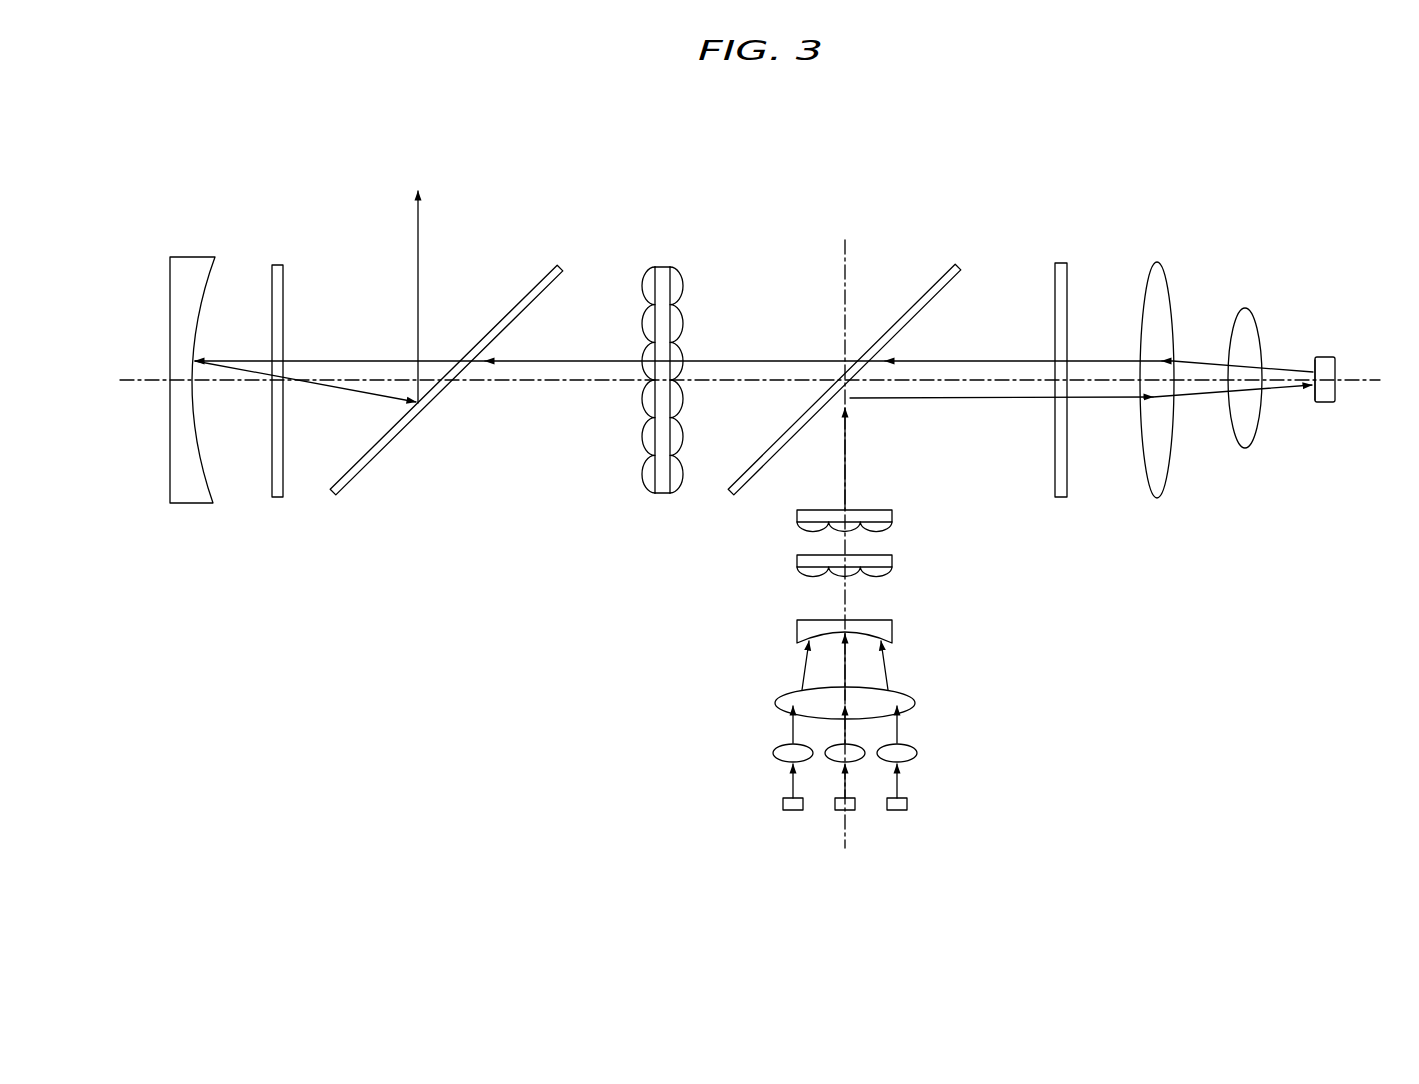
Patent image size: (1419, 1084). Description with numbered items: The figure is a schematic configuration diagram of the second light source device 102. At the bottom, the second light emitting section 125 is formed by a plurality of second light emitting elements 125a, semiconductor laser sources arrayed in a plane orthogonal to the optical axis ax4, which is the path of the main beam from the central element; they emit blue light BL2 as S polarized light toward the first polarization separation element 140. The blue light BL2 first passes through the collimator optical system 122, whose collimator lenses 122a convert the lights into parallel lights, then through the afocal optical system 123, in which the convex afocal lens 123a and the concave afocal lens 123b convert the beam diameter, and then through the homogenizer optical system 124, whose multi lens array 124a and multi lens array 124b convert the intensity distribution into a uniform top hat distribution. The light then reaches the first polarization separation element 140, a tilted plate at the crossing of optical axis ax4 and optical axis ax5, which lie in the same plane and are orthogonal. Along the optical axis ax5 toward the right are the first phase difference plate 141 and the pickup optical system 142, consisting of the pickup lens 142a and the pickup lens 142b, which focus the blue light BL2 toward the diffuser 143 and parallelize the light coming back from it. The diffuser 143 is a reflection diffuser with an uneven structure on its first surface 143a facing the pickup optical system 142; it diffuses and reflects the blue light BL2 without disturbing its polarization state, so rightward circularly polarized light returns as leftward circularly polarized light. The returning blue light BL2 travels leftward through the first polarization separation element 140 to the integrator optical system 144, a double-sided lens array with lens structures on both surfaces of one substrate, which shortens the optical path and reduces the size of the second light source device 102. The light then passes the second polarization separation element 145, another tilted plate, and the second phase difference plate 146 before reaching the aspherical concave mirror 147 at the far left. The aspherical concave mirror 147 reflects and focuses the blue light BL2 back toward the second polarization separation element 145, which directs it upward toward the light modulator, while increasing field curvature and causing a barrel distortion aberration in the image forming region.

The second light source device 102 is at (856, 183).
The collimator optical system 122 is at (857, 739).
The collimator lens 122a is at (773, 751).
The afocal optical system 123 is at (933, 669).
The afocal lens 123a is at (908, 697).
The afocal lens 123b is at (892, 635).
The homogenizer optical system 124 is at (944, 556).
The multi lens array 124a is at (892, 570).
The multi lens array 124b is at (892, 524).
The second light emitting section 125 is at (897, 818).
The second light emitting element 125a is at (836, 806).
The first polarization separation element 140 is at (927, 295).
The first phase difference plate 141 is at (1062, 263).
The pickup optical system 142 is at (1200, 313).
The pickup lens 142a is at (1157, 265).
The pickup lens 142b is at (1243, 310).
The diffuser 143 is at (1303, 388).
The first surface 143a is at (1310, 397).
The integrator optical system 144 is at (660, 267).
The second polarization separation element 145 is at (530, 292).
The second phase difference plate 146 is at (280, 265).
The aspherical concave mirror 147 is at (187, 262).
The blue light BL2 is at (738, 360).
The optical axis ax4 is at (848, 833).
The optical axis ax5 is at (1360, 385).